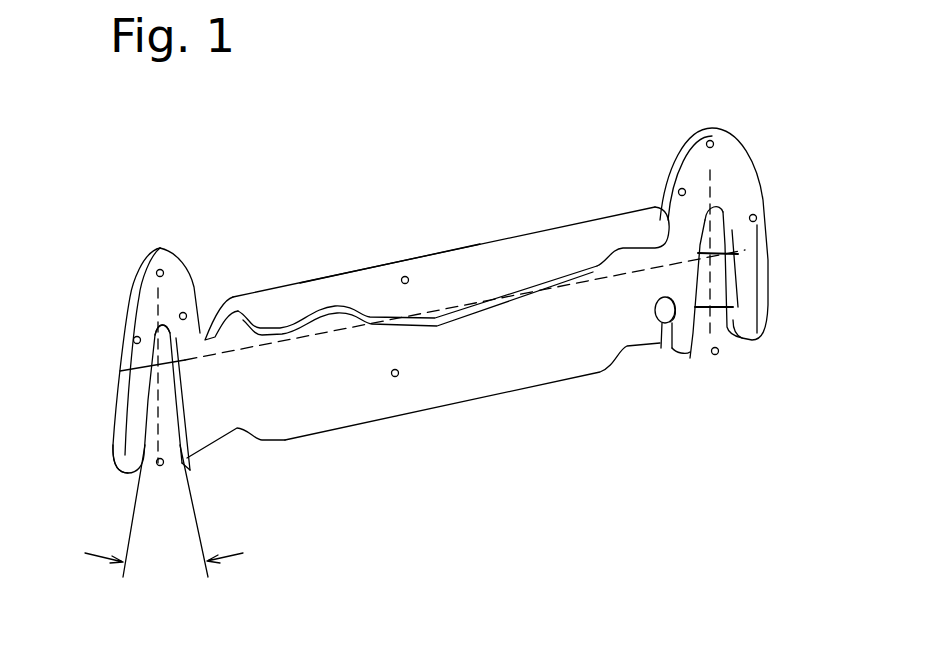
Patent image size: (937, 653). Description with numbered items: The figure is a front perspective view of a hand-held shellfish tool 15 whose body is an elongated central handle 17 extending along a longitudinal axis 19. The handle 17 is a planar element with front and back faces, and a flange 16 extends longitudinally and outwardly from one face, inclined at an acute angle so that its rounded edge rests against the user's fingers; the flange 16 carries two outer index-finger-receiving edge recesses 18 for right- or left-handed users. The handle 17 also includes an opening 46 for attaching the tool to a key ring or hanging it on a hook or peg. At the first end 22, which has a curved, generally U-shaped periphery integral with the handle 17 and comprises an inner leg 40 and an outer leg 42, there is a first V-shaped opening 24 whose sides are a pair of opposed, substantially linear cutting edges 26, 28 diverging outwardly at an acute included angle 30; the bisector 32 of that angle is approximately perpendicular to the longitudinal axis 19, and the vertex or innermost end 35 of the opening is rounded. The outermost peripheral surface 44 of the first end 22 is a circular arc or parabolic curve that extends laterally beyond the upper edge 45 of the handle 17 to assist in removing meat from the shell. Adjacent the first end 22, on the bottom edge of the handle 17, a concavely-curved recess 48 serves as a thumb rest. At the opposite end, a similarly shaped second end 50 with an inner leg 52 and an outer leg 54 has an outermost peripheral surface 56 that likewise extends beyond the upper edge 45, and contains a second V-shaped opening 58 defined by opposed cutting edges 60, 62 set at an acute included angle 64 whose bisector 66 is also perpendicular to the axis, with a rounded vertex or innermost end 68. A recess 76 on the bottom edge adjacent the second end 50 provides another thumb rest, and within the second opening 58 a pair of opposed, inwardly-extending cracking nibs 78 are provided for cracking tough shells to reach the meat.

The hand-held shellfish tool 15 is at (502, 120).
The flange 16 is at (404, 277).
The elongated central handle 17 is at (396, 376).
The index-finger-receiving edge recesses 18 is at (318, 310).
The longitudinal axis 19 is at (464, 295).
The first end 22 is at (157, 270).
The first V-shaped opening 24 is at (157, 465).
The cutting edge 26 is at (153, 417).
The cutting edge 28 is at (176, 382).
The acute included angle 30 is at (164, 515).
The bisector 32 is at (163, 440).
The vertex or innermost end 35 is at (168, 357).
The inner leg 40 is at (185, 313).
The outer leg 42 is at (134, 337).
The outermost peripheral surface 44 is at (157, 243).
The upper edge 45 is at (435, 253).
The opening 46 is at (670, 348).
The recess 48 is at (237, 433).
The second end 50 is at (712, 140).
The inner leg 52 is at (680, 189).
The outer leg 54 is at (756, 216).
The outermost peripheral surface 56 is at (700, 127).
The second V-shaped opening 58 is at (717, 354).
The cutting edge 60 is at (737, 250).
The cutting edge 62 is at (738, 255).
The acute included angle 64 is at (733, 307).
The bisector 66 is at (714, 210).
The vertex or innermost end 68 is at (722, 237).
The recess 76 is at (627, 347).
The cracking nibs 78 is at (753, 339).